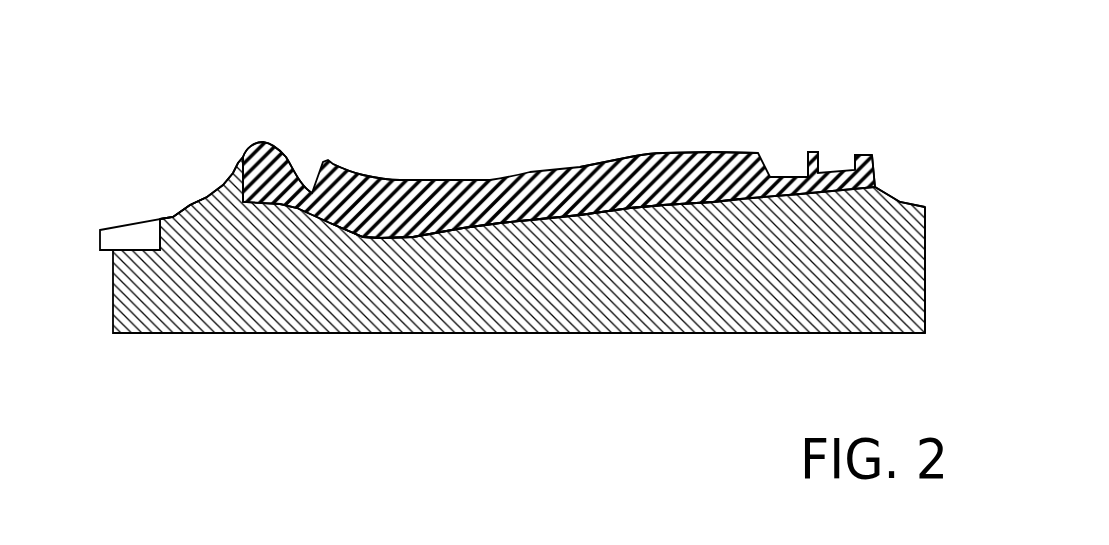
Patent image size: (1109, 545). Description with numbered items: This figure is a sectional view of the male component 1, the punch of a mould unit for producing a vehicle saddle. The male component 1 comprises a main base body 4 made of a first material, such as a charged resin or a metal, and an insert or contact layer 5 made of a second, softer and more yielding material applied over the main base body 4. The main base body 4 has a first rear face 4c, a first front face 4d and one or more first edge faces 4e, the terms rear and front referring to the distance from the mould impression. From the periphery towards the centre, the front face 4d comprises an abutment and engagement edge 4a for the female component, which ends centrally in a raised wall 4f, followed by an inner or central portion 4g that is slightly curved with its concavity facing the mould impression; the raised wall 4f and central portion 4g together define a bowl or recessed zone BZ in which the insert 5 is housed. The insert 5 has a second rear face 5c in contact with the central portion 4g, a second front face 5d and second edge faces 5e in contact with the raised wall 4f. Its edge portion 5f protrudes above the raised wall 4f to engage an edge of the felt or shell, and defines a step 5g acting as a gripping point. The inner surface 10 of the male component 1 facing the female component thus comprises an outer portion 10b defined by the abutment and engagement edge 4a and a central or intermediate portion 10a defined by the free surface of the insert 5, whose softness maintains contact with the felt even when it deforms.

The male component 1 is at (527, 257).
The main base body 4 is at (542, 300).
The abutment and engagement edge 4a is at (900, 203).
The first rear face 4c is at (355, 333).
The first front face 4d is at (593, 218).
The first edge face 4e is at (928, 275).
The raised wall 4f is at (240, 160).
The inner or central portion 4g is at (452, 232).
The insert or contact layer 5 is at (503, 180).
The second rear face 5c is at (675, 208).
The second front face 5d is at (728, 153).
The second edge face 5e is at (234, 177).
The edge portion 5f is at (860, 165).
The step 5g is at (880, 175).
The inner surface 10 is at (645, 154).
The central or intermediate portion 10a is at (373, 173).
The outer portion 10b is at (190, 206).
The bowl or recessed zone BZ is at (264, 172).